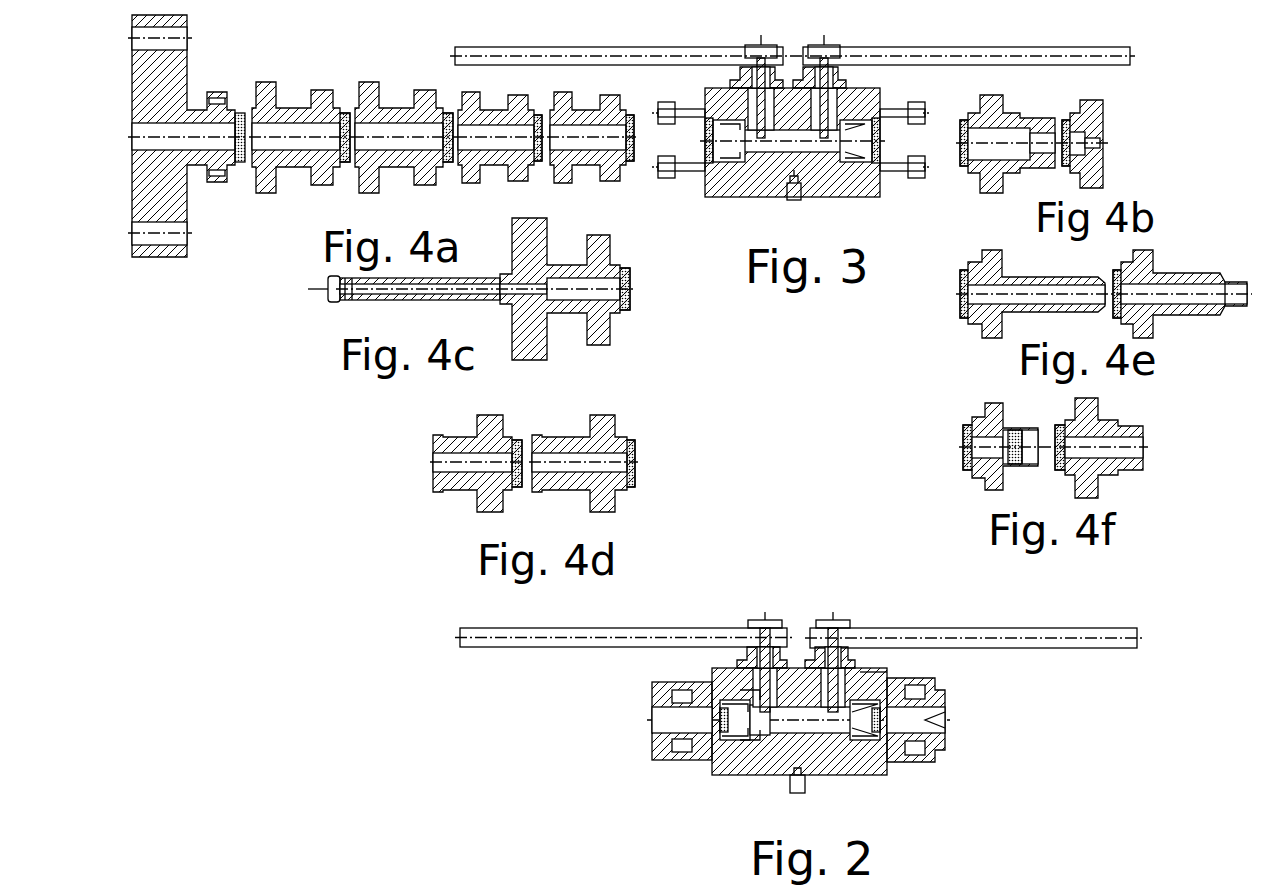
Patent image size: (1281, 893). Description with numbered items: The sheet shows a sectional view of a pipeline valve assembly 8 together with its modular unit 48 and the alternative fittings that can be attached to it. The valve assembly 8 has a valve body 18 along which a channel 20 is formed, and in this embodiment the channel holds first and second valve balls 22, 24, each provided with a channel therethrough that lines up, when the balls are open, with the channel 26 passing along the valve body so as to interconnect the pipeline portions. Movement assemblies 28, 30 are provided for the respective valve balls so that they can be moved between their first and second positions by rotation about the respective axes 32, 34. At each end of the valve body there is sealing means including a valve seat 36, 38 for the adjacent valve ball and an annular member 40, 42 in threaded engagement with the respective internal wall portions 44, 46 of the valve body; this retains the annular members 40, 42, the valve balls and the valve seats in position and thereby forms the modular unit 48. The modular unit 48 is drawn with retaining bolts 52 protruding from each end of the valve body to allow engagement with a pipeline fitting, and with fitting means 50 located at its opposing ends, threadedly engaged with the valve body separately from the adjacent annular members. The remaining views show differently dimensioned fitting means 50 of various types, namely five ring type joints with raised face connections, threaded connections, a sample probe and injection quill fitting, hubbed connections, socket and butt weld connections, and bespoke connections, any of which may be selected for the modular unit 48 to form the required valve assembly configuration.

In FIG. 2, the valve assembly 8 is at (840, 768).
In FIG. 2, the valve body 18 is at (778, 762).
In FIG. 2, the channel 20 is at (805, 715).
In FIG. 2, the first valve ball 22 is at (750, 738).
In FIG. 2, the second valve ball 24 is at (875, 738).
In FIG. 2, the channel 26 is at (925, 718).
In FIG. 2, the movement assembly 28 is at (715, 640).
In FIG. 2, the movement assembly 30 is at (1000, 638).
In FIG. 2, the axis 32 is at (762, 625).
In FIG. 2, the axis 34 is at (833, 620).
In FIG. 2, the valve seat 36 is at (752, 700).
In FIG. 2, the valve seat 38 is at (845, 700).
In FIG. 2, the annular member 40 is at (700, 757).
In FIG. 2, the annular member 42 is at (905, 722).
In FIG. 2, the internal wall portion 44 is at (718, 762).
In FIG. 2, the internal wall portion 46 is at (880, 690).
In FIG. 3, the modular unit 48 is at (805, 185).
In FIG. 4A, the fitting means 50 is at (163, 205).
In FIG. 4C, the fitting means 50 is at (615, 325).
In FIG. 4D, the fitting means 50 is at (462, 452).
In FIG. 4B, the fitting means 50 is at (992, 180).
In FIG. 4E, the fitting means 50 is at (985, 325).
In FIG. 4F, the fitting means 50 is at (990, 484).
In FIG. 3, the retaining bolts 52 is at (690, 175).